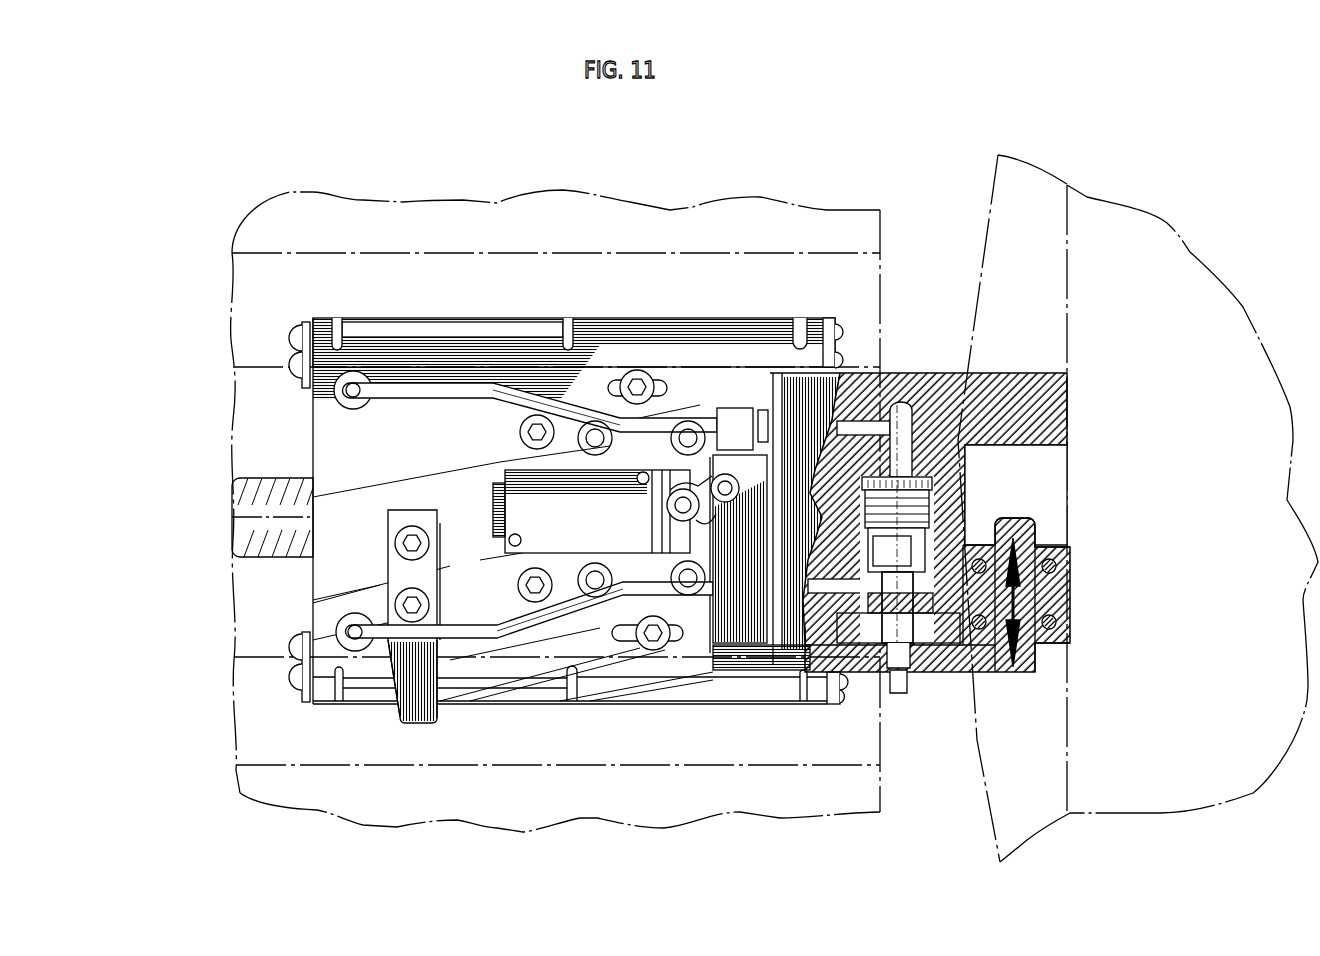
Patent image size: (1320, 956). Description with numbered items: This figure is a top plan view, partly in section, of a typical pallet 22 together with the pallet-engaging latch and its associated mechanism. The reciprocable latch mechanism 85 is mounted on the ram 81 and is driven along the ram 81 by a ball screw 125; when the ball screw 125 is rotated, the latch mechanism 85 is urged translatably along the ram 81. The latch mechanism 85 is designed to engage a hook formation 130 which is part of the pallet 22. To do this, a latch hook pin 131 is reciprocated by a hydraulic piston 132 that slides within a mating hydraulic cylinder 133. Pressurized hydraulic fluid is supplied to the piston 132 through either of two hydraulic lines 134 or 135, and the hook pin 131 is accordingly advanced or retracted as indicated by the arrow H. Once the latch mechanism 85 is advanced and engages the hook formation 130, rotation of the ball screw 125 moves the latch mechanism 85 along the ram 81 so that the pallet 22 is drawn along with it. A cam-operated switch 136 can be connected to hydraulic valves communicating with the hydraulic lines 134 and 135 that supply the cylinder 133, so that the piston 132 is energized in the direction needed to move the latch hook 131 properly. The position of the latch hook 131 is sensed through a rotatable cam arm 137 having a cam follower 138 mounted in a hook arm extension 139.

The ram 81 is at (813, 216).
The pallet 22 is at (1138, 303).
The latch mechanism 85 is at (916, 345).
The ball screw 125 is at (265, 480).
The hook formation 130 is at (1050, 480).
The latch hook pin 131 is at (1018, 673).
The hydraulic piston 132 is at (903, 564).
The hydraulic cylinder 133 is at (858, 552).
The hydraulic line 134 is at (425, 394).
The hydraulic line 135 is at (462, 631).
The cam-operated switch 136 is at (592, 516).
The rotatable cam arm 137 is at (740, 549).
The cam follower 138 is at (698, 498).
The hook arm extension 139 is at (749, 616).
The arrow H is at (1017, 597).